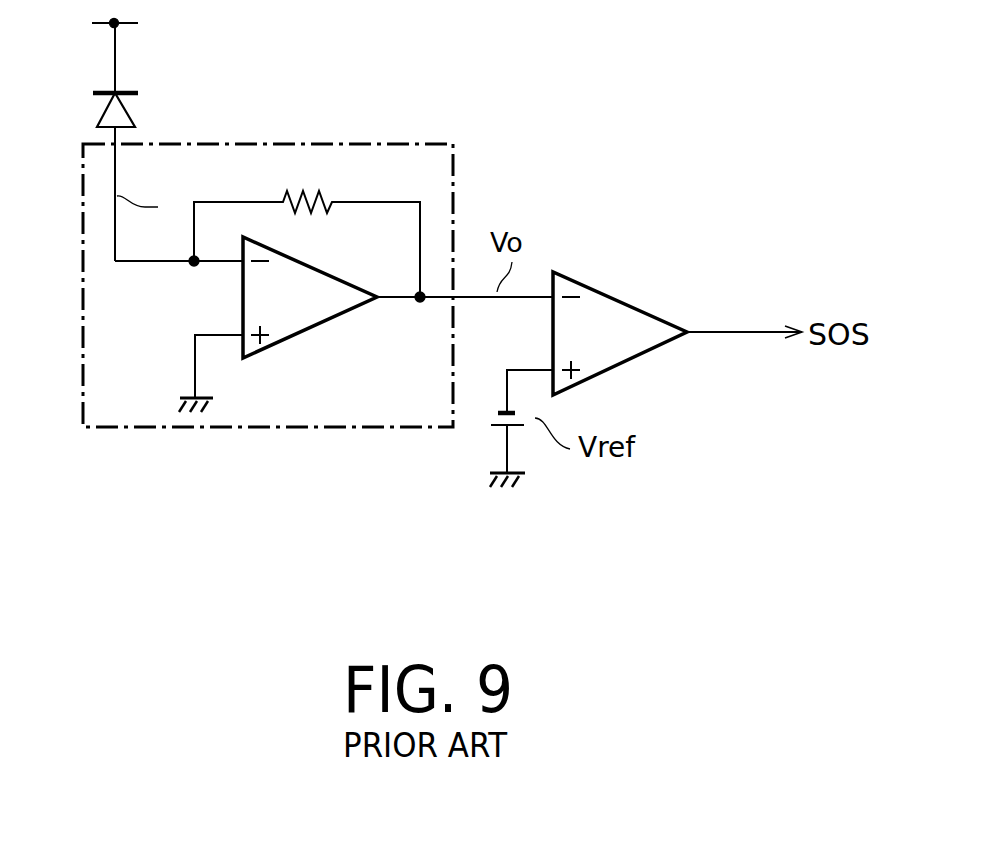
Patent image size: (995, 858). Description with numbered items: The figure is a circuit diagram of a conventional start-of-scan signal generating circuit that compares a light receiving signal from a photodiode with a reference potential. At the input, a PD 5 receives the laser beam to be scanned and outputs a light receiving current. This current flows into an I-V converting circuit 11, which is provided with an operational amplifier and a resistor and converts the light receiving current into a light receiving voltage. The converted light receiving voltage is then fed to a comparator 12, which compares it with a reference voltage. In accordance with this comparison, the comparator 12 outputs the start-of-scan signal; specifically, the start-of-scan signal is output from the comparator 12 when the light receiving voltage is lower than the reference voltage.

The PD 5 is at (97, 108).
The I-V converting circuit 11 is at (322, 143).
The comparator 12 is at (625, 300).